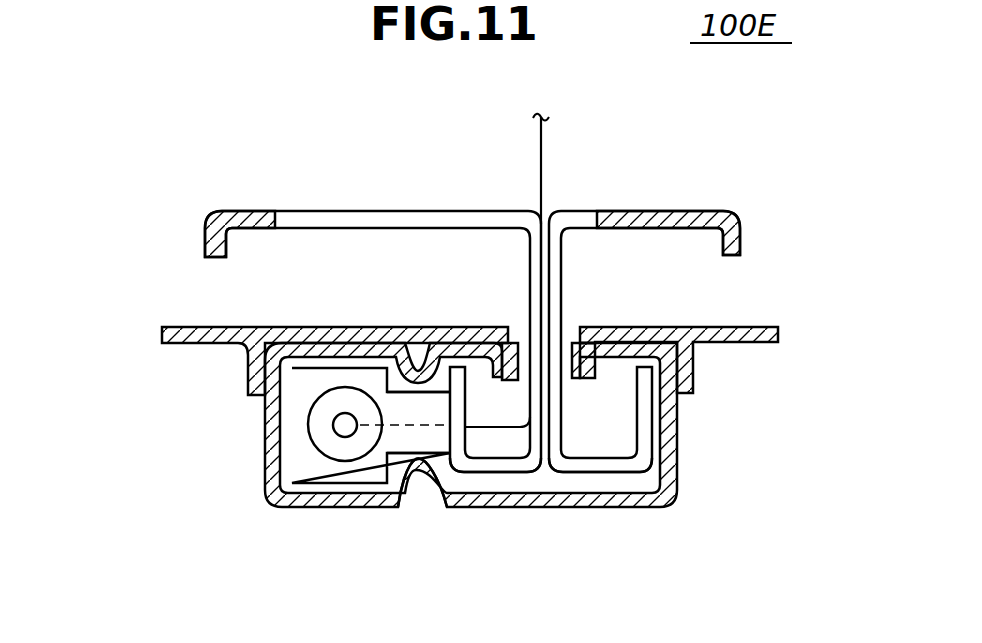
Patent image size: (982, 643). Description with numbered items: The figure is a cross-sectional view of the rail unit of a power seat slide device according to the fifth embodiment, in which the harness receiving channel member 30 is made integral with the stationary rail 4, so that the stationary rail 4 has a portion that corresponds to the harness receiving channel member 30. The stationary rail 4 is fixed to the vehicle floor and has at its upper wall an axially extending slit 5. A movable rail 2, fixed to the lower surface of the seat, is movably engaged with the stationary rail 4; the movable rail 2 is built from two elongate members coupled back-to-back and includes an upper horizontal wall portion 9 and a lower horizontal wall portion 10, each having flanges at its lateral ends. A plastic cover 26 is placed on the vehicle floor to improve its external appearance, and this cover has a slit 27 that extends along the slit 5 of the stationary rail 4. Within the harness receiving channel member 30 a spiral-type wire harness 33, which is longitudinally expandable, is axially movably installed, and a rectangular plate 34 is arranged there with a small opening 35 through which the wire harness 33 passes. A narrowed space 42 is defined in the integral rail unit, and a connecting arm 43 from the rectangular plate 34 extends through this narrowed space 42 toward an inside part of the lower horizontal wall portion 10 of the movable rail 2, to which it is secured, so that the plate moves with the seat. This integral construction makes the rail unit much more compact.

The movable rail 2 is at (693, 208).
The upper horizontal wall portion 9 is at (505, 210).
The plastic cover 26 is at (228, 325).
The slit 27 is at (508, 330).
The slit 5 is at (577, 362).
The lower horizontal wall portion 10 is at (577, 474).
The stationary rail 4 is at (683, 459).
The harness receiving channel member 30 is at (473, 466).
The wire harness 33 is at (310, 441).
The rectangular plate 34 is at (342, 473).
The small opening 35 is at (352, 423).
The narrowed space 42 is at (413, 490).
The connecting arm 43 is at (432, 441).